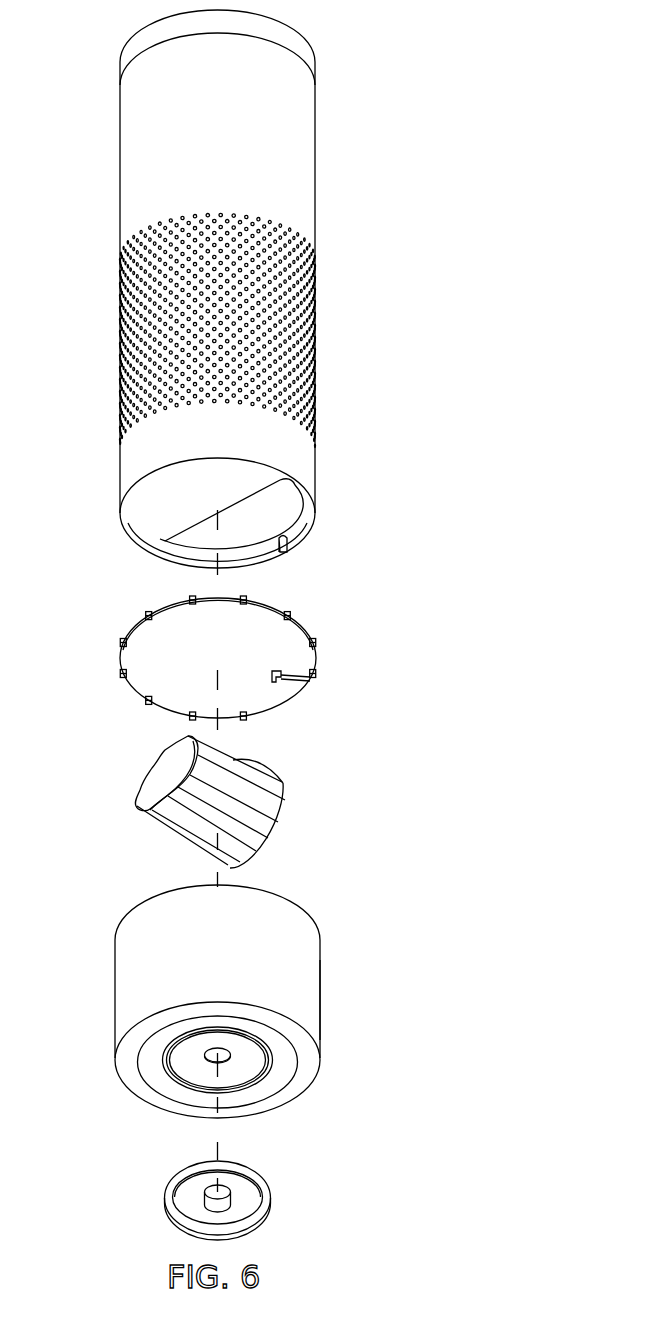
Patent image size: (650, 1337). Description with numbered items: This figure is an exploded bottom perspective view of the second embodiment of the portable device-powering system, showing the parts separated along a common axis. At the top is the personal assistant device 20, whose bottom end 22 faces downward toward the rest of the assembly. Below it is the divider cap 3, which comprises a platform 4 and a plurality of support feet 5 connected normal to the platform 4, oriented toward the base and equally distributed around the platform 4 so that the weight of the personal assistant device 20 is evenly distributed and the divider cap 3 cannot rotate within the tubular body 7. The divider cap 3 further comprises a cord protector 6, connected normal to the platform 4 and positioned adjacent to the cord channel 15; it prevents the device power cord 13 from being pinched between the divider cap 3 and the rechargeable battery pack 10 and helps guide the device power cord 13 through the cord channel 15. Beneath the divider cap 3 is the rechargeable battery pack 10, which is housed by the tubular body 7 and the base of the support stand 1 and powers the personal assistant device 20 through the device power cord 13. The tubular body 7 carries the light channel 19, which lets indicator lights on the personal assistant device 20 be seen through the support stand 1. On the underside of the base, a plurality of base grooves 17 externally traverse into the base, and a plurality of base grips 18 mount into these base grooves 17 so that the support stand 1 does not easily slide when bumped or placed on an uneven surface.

The support stand 1 is at (333, 1022).
The divider cap 3 is at (102, 650).
The platform 4 is at (178, 607).
The plurality of support feet 5 is at (288, 622).
The cord protector 6 is at (278, 672).
The tubular body 7 is at (115, 998).
The rechargeable battery pack 10 is at (139, 806).
The device power cord 13 is at (284, 782).
The cord channel 15 is at (298, 684).
The plurality of base grooves 17 is at (211, 1062).
The plurality of base grips 18 is at (208, 1190).
The light channel 19 is at (288, 901).
The personal assistant device 20 is at (120, 237).
The bottom end 22 is at (134, 523).